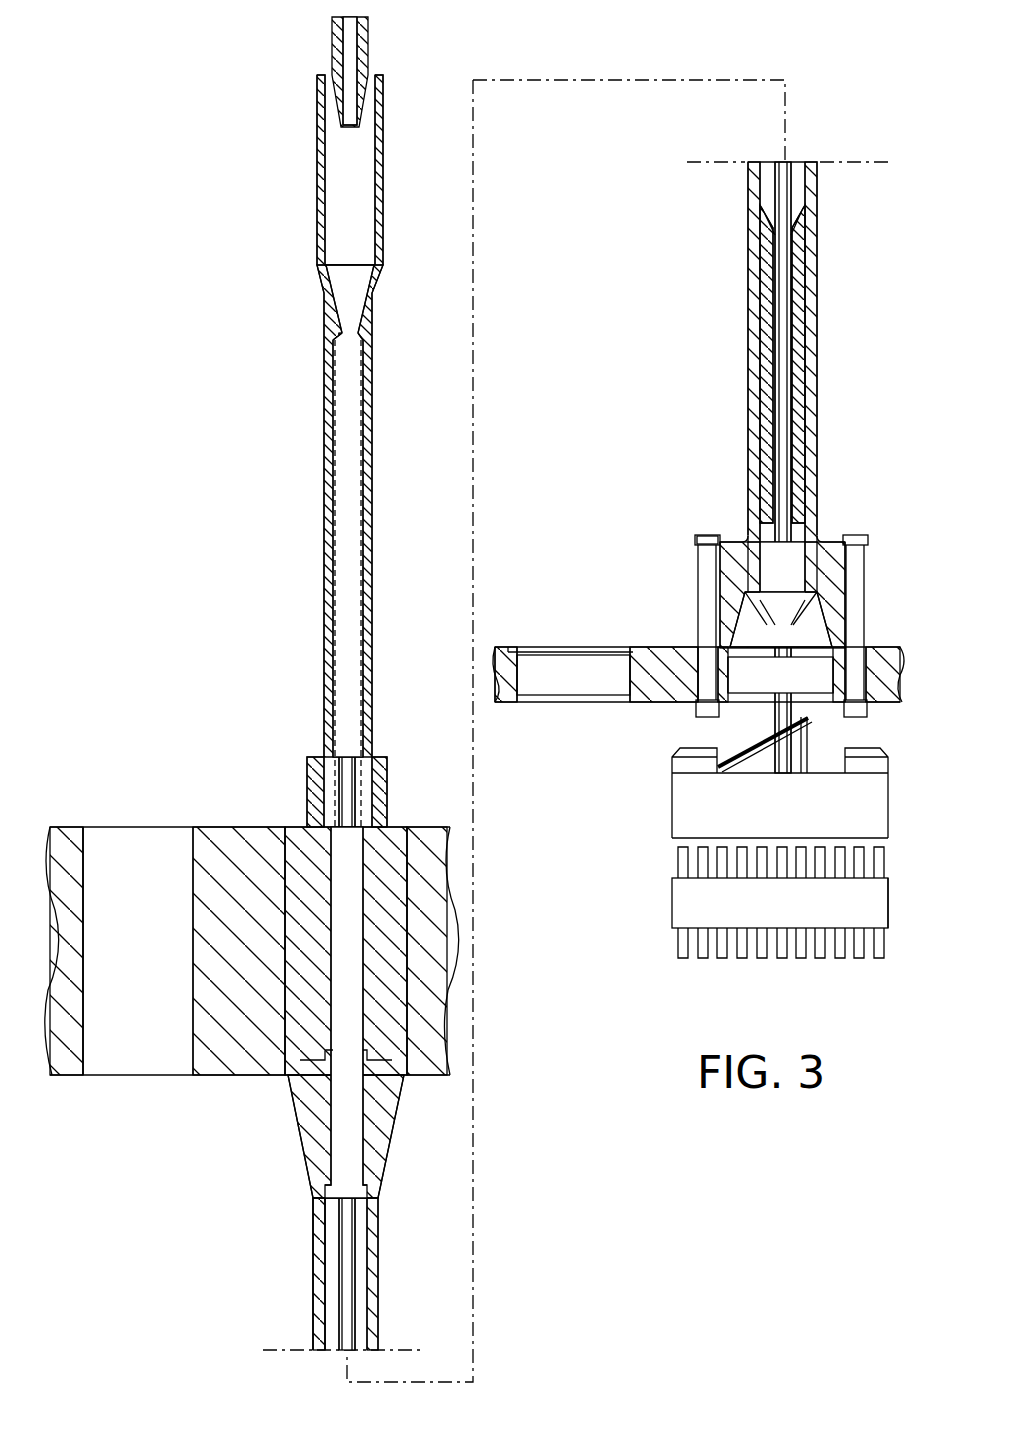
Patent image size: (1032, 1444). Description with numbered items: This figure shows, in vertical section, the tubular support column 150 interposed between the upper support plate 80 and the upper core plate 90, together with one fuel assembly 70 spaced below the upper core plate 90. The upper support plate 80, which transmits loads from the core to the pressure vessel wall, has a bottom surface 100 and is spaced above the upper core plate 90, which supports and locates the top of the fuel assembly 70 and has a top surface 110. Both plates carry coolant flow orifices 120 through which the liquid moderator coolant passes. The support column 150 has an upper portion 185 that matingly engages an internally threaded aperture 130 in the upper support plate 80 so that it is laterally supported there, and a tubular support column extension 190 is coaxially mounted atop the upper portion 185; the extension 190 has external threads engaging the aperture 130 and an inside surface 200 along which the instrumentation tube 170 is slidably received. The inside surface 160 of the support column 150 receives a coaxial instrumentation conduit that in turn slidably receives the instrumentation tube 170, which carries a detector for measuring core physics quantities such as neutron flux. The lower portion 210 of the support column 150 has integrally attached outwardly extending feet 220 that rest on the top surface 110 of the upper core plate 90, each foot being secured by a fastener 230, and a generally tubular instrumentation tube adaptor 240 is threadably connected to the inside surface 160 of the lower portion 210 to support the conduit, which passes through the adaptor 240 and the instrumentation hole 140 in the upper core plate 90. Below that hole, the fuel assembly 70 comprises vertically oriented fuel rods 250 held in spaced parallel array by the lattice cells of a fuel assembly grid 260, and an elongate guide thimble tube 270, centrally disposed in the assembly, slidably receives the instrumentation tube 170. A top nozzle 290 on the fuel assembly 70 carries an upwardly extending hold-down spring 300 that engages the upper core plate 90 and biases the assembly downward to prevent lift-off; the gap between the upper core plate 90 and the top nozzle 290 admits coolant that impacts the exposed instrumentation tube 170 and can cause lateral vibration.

The fuel assembly 70 is at (888, 925).
The upper support plate 80 is at (62, 830).
The upper core plate 90 is at (880, 650).
The bottom surface 100 is at (272, 1077).
The top surface 110 is at (507, 690).
The coolant flow orifices 120 is at (192, 1030).
The internally threaded aperture 130 is at (310, 830).
The instrumentation hole 140 is at (826, 676).
The support column 150 is at (380, 1338).
The inside surface 160 is at (319, 1300).
The instrumentation tube 170 is at (345, 535).
The upper portion 185 is at (397, 1118).
The support column extension 190 is at (368, 455).
The inside surface 200 is at (322, 463).
The lower portion 210 is at (815, 495).
The feet 220 is at (860, 555).
The fastener 230 is at (706, 535).
The instrumentation tube adaptor 240 is at (740, 575).
The fuel rods 250 is at (680, 858).
The fuel assembly grid 260 is at (670, 915).
The guide thimble tube 270 is at (783, 847).
The top nozzle 290 is at (678, 805).
The hold-down spring 300 is at (735, 740).